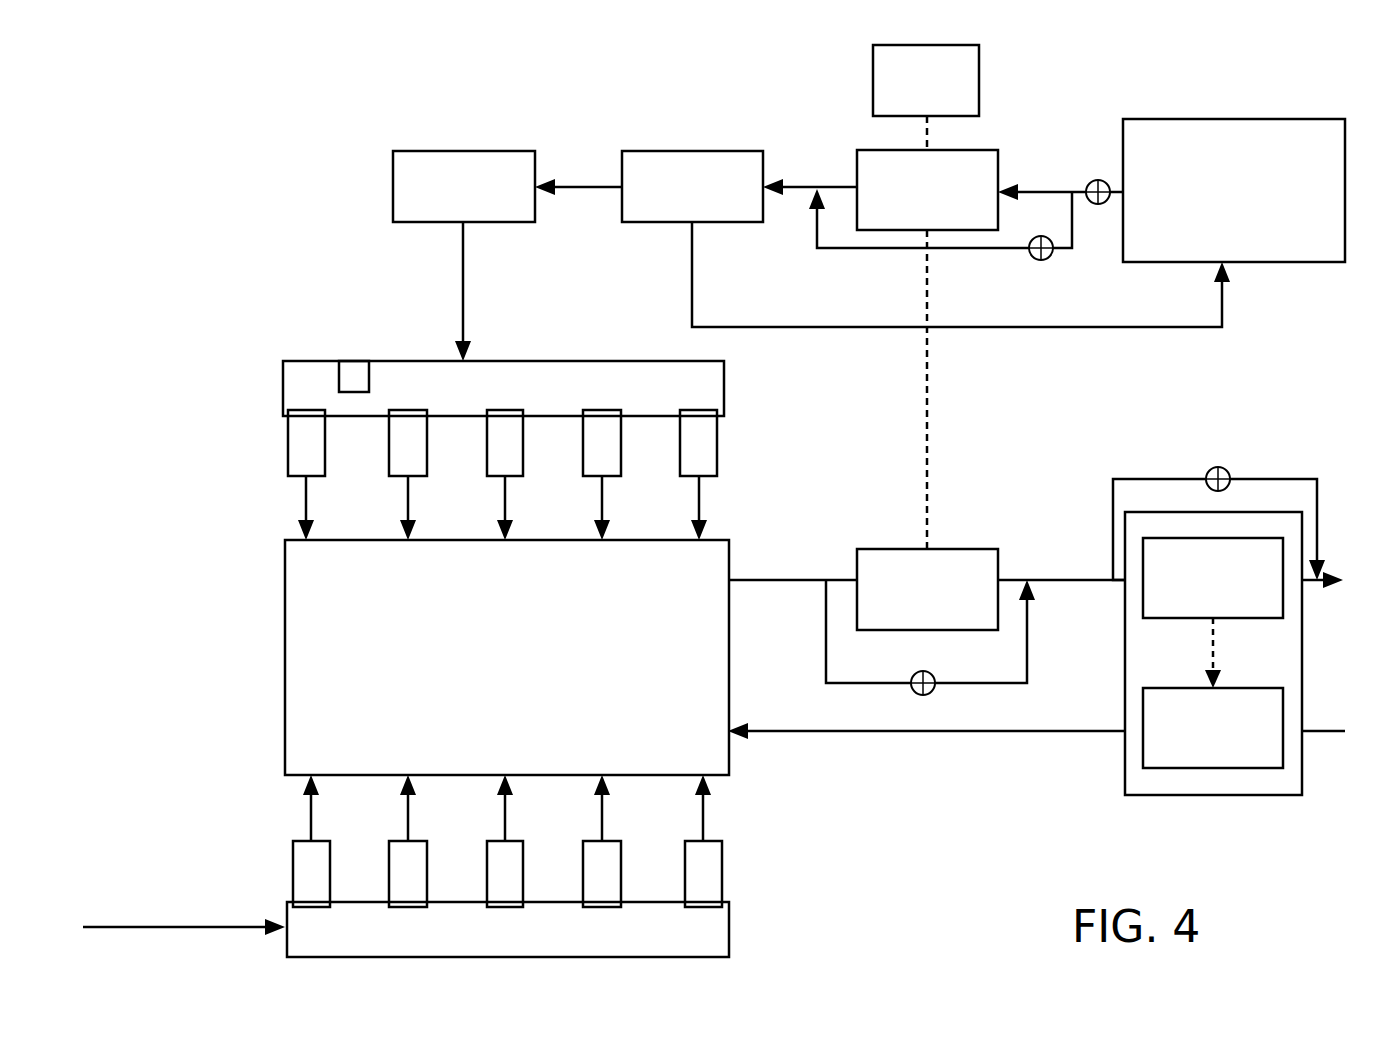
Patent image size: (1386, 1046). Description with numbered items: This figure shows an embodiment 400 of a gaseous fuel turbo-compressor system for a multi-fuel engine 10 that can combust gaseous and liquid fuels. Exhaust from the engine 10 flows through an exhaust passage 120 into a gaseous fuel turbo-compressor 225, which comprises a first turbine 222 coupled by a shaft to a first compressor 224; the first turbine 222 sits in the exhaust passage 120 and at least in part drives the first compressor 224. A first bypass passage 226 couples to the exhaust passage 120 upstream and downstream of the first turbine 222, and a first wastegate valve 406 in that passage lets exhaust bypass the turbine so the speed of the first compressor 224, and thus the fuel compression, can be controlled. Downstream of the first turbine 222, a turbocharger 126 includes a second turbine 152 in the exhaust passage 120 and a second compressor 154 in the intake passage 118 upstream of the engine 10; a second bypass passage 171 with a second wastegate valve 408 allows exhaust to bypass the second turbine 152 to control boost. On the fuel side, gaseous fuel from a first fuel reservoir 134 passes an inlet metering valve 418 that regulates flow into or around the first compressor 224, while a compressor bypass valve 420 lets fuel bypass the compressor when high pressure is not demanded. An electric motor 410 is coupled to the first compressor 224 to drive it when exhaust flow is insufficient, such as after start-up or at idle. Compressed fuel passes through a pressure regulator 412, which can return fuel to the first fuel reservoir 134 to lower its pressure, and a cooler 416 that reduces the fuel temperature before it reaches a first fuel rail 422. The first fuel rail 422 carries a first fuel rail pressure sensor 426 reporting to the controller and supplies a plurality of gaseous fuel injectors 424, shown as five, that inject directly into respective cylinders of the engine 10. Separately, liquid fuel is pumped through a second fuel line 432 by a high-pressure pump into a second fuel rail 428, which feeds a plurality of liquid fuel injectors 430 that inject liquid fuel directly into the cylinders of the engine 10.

The gaseous fuel turbo-compressor system embodiment 400 is at (1306, 78).
The electric motor 410 is at (909, 90).
The first compressor 224 is at (910, 201).
The cooler 416 is at (447, 197).
The pressure regulator 412 is at (675, 197).
The first fuel reservoir 134 is at (1290, 202).
The inlet metering valve 418 is at (1088, 204).
The compressor bypass valve 420 is at (1050, 258).
The gaseous fuel turbo-compressor 225 is at (982, 402).
The first fuel rail 422 is at (486, 400).
The first fuel rail pressure sensor 426 is at (353, 366).
The plurality of gaseous fuel injectors 424 is at (262, 470).
The engine 10 is at (495, 681).
The plurality of liquid fuel injectors 430 is at (752, 852).
The second fuel rail 428 is at (490, 941).
The second fuel line 432 is at (148, 927).
The exhaust passage 120 is at (765, 580).
The first turbine 222 is at (910, 601).
The first bypass passage 226 is at (1032, 623).
The first wastegate valve 406 is at (926, 695).
The intake passage 118 is at (780, 735).
The turbocharger 126 is at (1302, 647).
The second turbine 152 is at (1196, 589).
The second compressor 154 is at (1196, 739).
The second bypass passage 171 is at (1280, 479).
The second wastegate valve 408 is at (1218, 467).